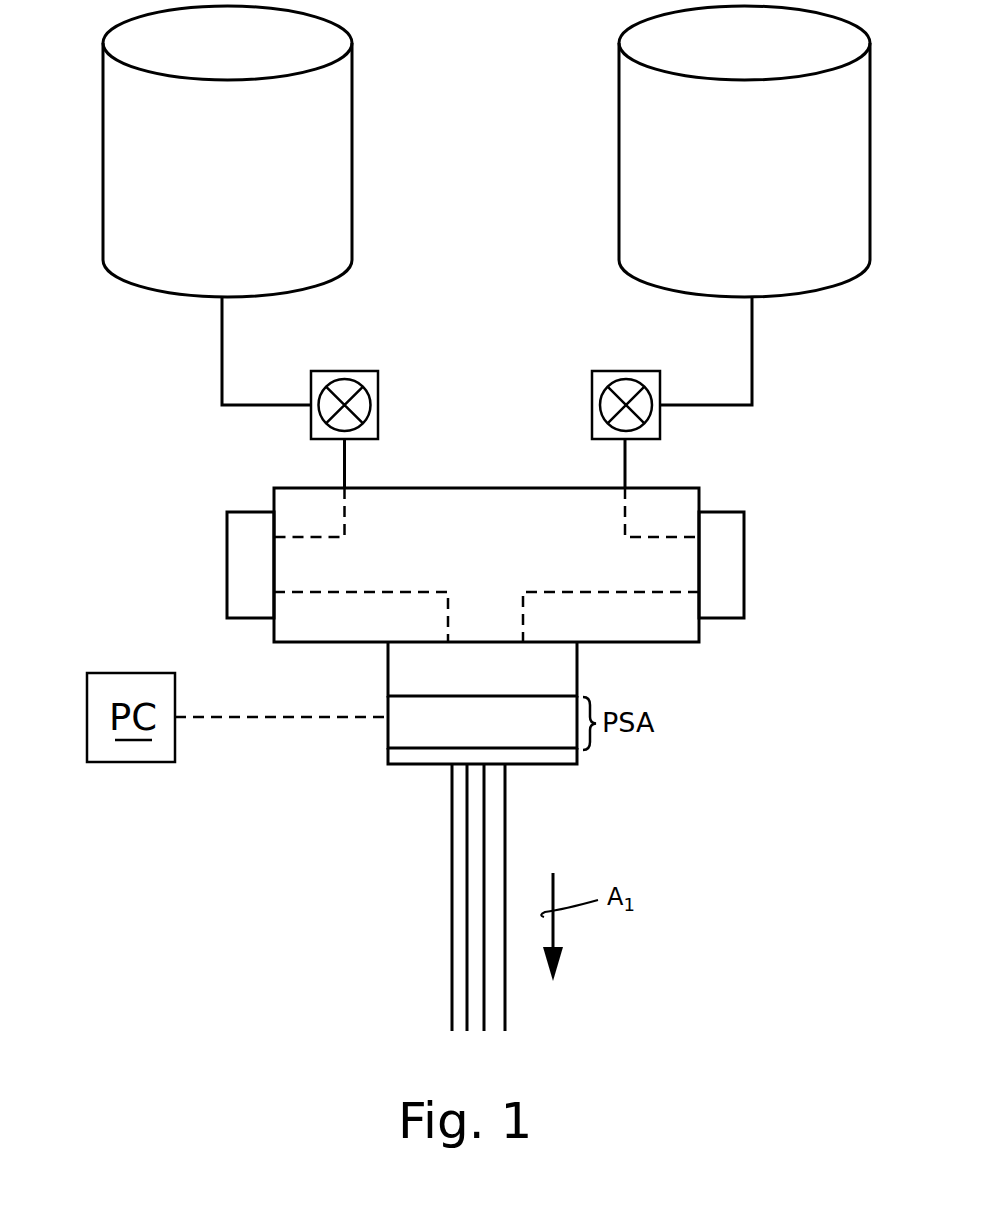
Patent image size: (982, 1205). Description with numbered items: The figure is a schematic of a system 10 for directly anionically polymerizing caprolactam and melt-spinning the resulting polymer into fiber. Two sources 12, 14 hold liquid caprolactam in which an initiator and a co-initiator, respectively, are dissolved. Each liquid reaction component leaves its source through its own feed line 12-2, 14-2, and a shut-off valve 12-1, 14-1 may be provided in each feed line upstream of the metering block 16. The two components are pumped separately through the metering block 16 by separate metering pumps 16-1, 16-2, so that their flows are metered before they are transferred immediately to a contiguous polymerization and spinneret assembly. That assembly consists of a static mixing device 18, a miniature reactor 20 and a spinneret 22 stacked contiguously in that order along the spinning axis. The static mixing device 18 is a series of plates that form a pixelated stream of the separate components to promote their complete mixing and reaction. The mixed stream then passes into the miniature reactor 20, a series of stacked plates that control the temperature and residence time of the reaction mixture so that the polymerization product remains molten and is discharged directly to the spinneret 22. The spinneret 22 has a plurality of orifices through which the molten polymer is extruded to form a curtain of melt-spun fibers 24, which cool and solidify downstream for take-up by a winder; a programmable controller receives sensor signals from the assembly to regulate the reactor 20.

The system 10 is at (228, 787).
The source of caprolactam with initiator 12 is at (117, 175).
The shut-off valve 12-1 is at (373, 371).
The feed line 12-2 is at (225, 322).
The source of caprolactam with co-initiator 14 is at (857, 157).
The shut-off valve 14-1 is at (592, 407).
The feed line 14-2 is at (754, 337).
The metering block 16 is at (477, 562).
The metering pump 16-1 is at (242, 535).
The metering pump 16-2 is at (733, 558).
The static mixing device 18 is at (487, 685).
The miniature reactor 20 is at (487, 736).
The spinneret 22 is at (563, 757).
The melt-spun fibers 24 is at (505, 936).